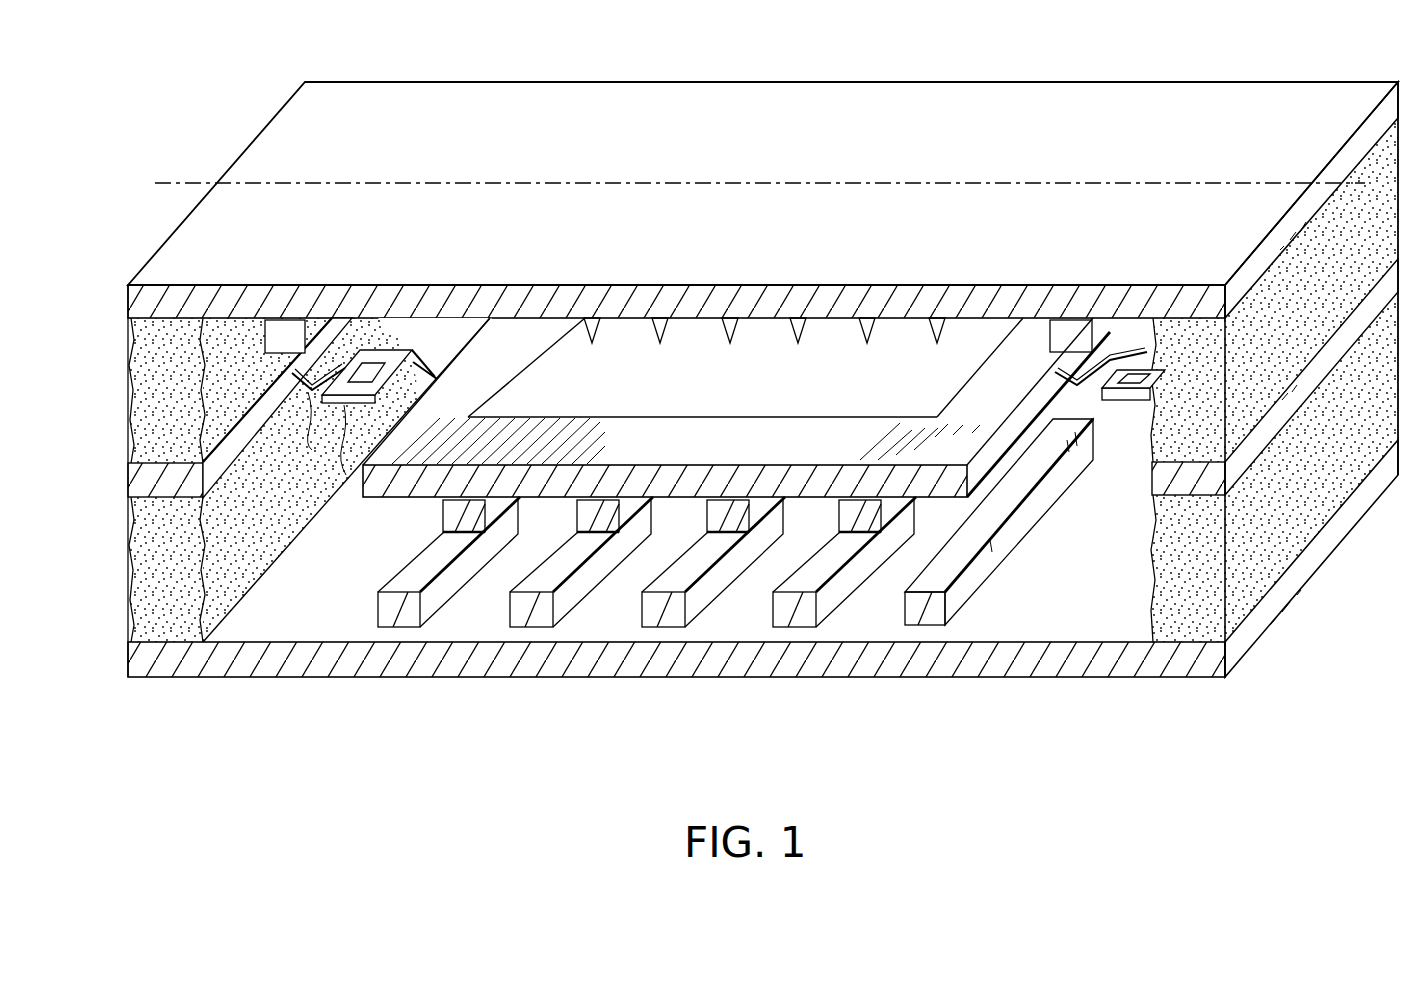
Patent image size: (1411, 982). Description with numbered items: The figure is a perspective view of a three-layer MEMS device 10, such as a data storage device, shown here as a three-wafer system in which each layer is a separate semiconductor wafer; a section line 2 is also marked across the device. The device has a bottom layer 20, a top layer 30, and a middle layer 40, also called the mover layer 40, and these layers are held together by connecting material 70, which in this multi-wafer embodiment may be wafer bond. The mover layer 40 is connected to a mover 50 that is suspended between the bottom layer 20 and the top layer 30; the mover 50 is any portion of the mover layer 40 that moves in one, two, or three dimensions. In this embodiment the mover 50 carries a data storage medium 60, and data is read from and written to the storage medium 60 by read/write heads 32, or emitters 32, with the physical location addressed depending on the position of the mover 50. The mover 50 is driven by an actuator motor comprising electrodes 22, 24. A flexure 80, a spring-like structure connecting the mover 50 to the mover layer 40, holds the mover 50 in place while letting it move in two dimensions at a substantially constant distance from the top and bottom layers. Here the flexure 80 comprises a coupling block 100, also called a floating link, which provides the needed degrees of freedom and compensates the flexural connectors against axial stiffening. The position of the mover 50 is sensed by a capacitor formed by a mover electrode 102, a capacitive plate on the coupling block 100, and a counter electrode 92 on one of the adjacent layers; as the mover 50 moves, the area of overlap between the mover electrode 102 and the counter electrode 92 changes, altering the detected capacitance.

The section line 2 is at (155, 183).
The MEMS device 10 is at (240, 126).
The bottom layer 20 is at (130, 660).
The electrodes 22 is at (775, 628).
The electrodes 24 is at (592, 545).
The top layer 30 is at (134, 300).
The read/write heads 32 is at (602, 325).
The middle layer 40 is at (150, 482).
The mover 50 is at (692, 454).
The data storage medium 60 is at (564, 396).
The connecting material 70 is at (132, 355).
The flexure 80 is at (310, 396).
The counter electrode 92 is at (284, 334).
The coupling block 100 is at (347, 404).
The mover electrode 102 is at (436, 344).